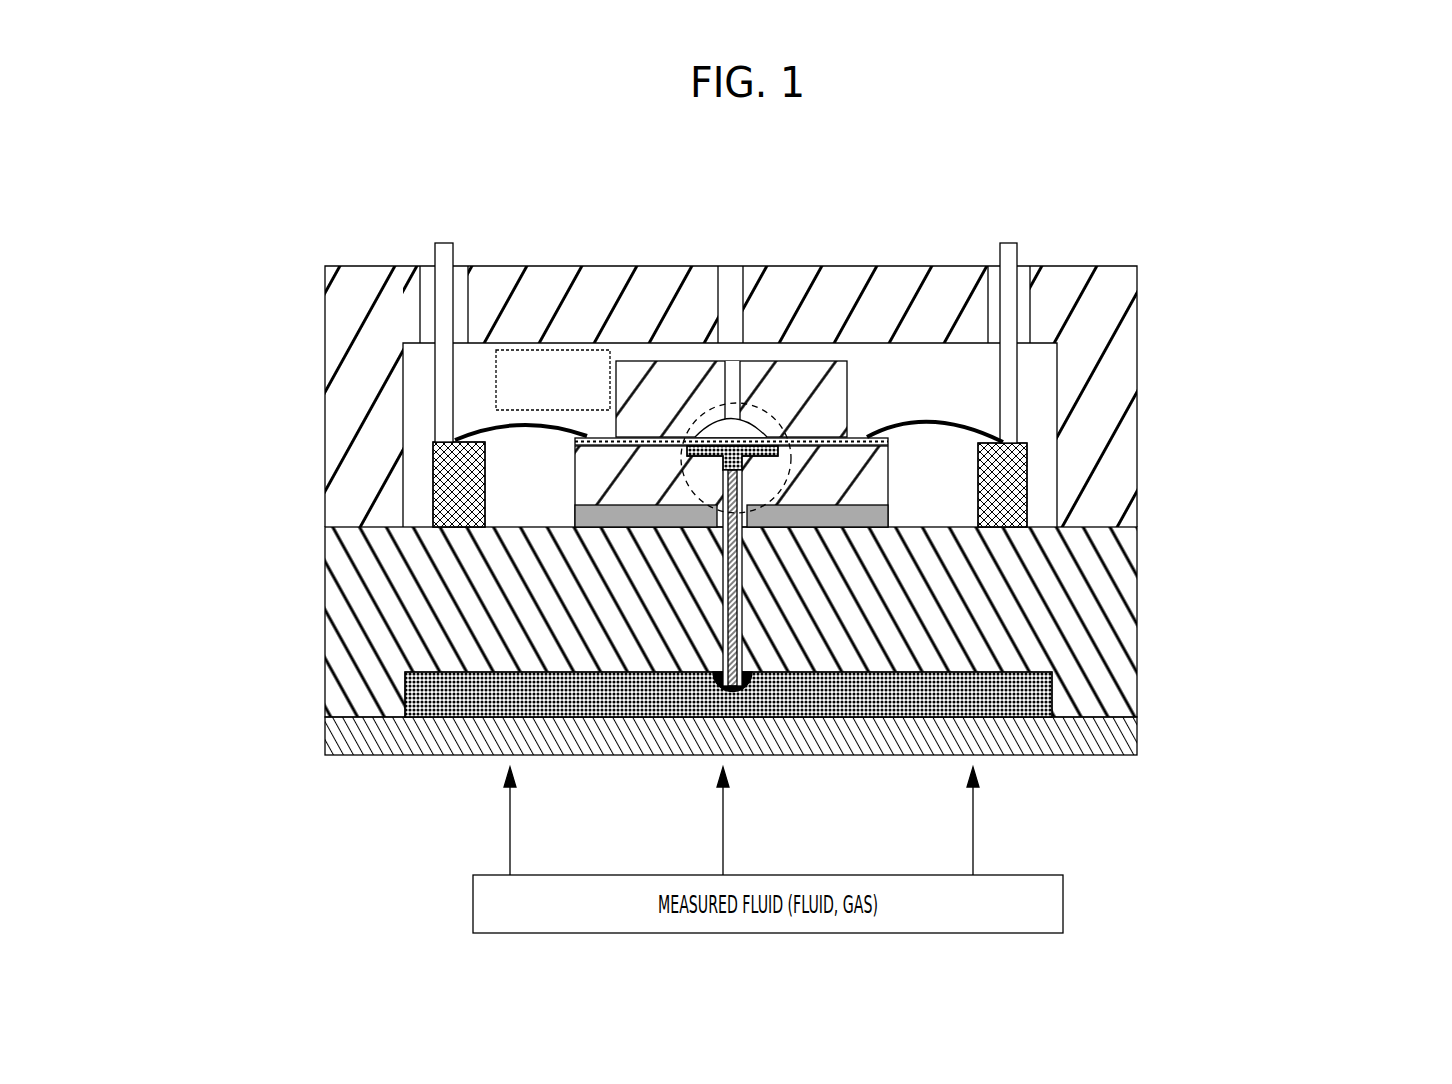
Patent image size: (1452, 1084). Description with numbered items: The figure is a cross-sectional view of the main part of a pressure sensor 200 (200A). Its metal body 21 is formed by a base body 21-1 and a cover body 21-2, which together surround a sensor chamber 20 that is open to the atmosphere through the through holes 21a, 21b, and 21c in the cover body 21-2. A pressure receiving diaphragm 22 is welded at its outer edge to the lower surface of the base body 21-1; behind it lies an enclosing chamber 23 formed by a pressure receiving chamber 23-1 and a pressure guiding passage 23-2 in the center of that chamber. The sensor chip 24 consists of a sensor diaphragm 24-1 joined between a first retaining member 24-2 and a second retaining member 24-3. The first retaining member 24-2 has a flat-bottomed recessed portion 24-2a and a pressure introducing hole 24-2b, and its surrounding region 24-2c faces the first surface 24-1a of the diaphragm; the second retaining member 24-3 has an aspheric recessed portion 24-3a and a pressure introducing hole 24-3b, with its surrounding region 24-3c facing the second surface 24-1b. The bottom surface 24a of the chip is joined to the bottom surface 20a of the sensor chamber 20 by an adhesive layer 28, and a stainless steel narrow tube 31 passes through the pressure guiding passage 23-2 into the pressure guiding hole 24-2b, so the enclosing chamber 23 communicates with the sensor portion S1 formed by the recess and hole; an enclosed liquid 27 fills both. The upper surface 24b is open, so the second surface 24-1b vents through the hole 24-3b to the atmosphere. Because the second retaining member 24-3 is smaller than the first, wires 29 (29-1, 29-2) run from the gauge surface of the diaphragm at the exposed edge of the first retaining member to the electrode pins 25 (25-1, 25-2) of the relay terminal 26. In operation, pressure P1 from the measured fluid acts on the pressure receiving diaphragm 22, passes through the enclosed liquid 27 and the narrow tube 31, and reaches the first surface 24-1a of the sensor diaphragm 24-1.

The sensor chamber 20 is at (960, 380).
The bottom surface of the sensor chamber 20a is at (487, 527).
The body 21 is at (665, 445).
The base body 21-1 is at (669, 622).
The cover body 21-2 is at (687, 350).
The through hole 21a is at (430, 295).
The through hole 21b is at (1025, 300).
The through hole 21c is at (730, 292).
The pressure receiving diaphragm 22 is at (323, 755).
The enclosing chamber 23 is at (728, 768).
The pressure receiving chamber 23-1 is at (690, 717).
The pressure guiding passage 23-2 is at (660, 717).
The sensor chip 24 is at (933, 495).
The sensor diaphragm 24-1 is at (909, 324).
The first surface of the sensor diaphragm 24-1a is at (690, 447).
The second surface of the sensor diaphragm 24-1b is at (733, 430).
The first retaining member 24-2 is at (926, 651).
The recessed portion 24-2a is at (800, 527).
The pressure introducing hole 24-2b is at (768, 527).
The surrounding region 24-2c is at (897, 527).
The second retaining member 24-3 is at (926, 286).
The recessed portion 24-3a is at (800, 385).
The pressure introducing hole 24-3b is at (727, 400).
The surrounding region 24-3c is at (643, 420).
The bottom surface of the sensor chip 24a is at (576, 517).
The upper surface of the sensor chip 24b is at (845, 410).
The electrode pin 25 is at (752, 282).
The electrode pin 25-1 is at (443, 262).
The electrode pin 25-2 is at (1012, 255).
The relay terminal 26 is at (455, 438).
The enclosed liquid 27 is at (1005, 695).
The adhesive layer 28 is at (550, 527).
The wire 29 is at (845, 337).
The wire 29-1 is at (502, 437).
The wire 29-2 is at (1027, 452).
The narrow tube 31 is at (713, 607).
The sensor portion S1 is at (790, 410).
The pressure P1 is at (752, 808).
The pressure sensor 200 is at (784, 505).
The pressure sensor 200A is at (784, 505).